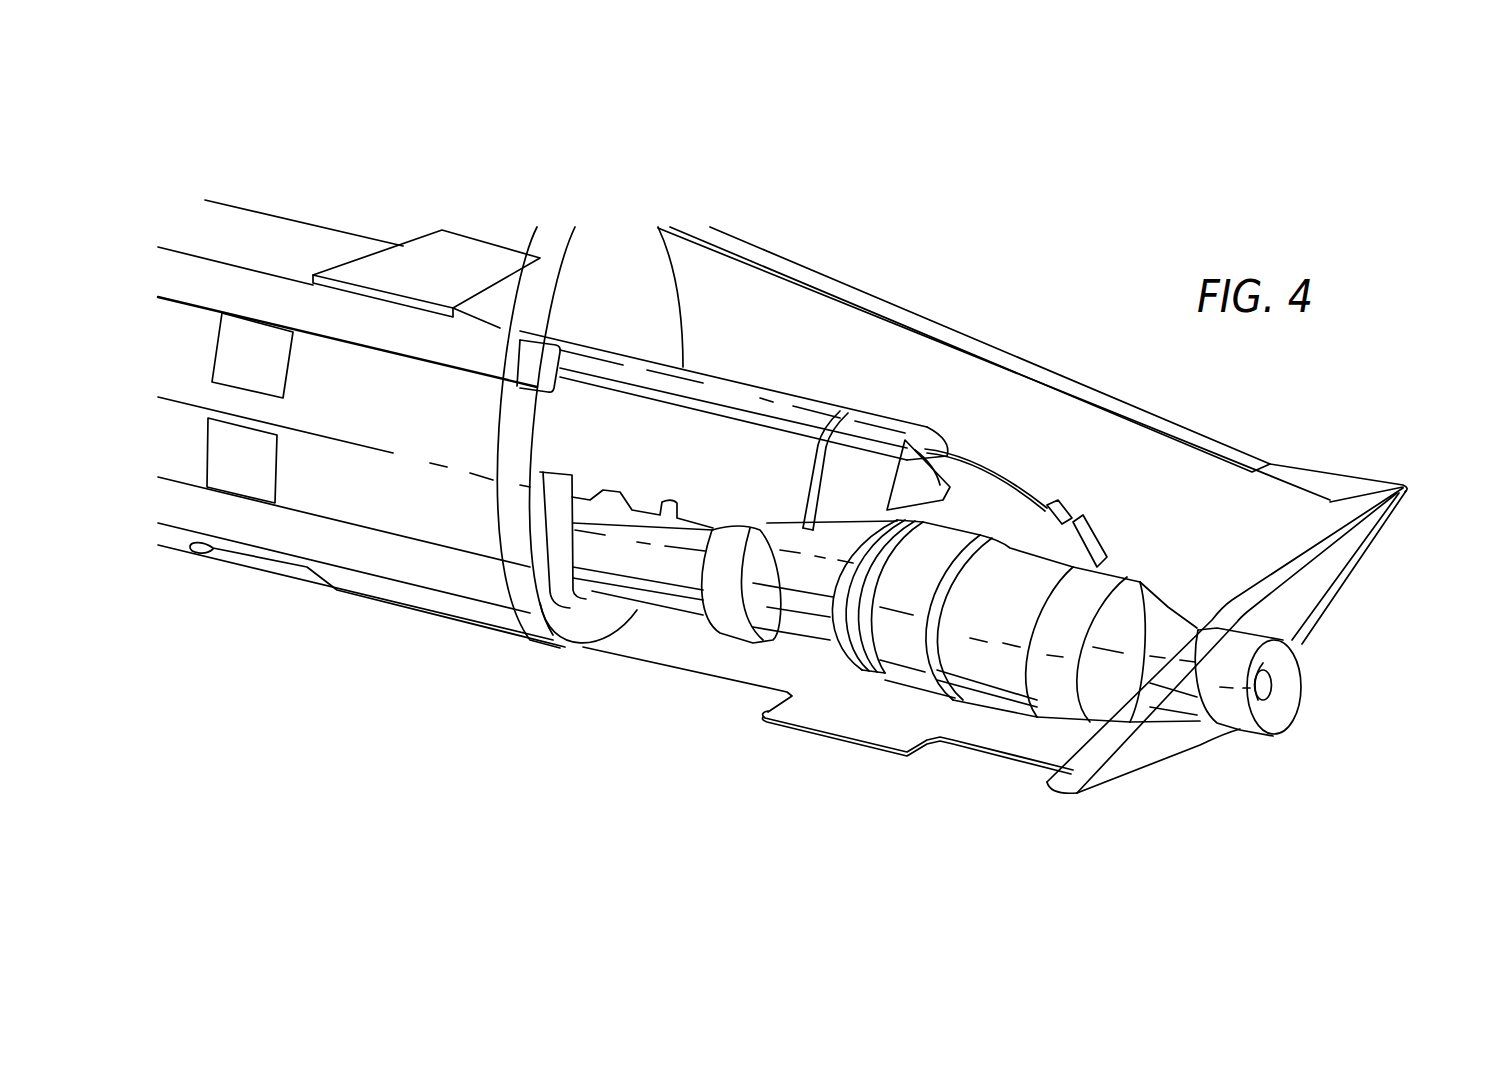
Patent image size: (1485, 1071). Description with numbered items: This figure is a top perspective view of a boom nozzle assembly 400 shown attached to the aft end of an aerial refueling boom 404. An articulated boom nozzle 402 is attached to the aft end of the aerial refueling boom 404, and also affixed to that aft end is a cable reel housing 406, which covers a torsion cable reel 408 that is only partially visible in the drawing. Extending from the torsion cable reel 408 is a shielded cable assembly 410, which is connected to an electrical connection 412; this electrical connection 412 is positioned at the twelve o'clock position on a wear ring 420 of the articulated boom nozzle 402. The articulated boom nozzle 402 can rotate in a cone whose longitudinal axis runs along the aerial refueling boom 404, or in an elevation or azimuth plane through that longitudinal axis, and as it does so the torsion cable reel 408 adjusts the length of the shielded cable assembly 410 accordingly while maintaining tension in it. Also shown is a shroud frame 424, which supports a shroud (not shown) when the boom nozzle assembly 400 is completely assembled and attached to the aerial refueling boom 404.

The boom nozzle assembly 400 is at (385, 196).
The articulated boom nozzle 402 is at (835, 754).
The aerial refueling boom 404 is at (430, 553).
The cable reel housing 406 is at (878, 436).
The torsion cable reel 408 is at (930, 460).
The shielded cable assembly 410 is at (1000, 467).
The electrical connection 412 is at (1093, 548).
The wear ring 420 is at (1040, 667).
The shroud frame 424 is at (1333, 580).